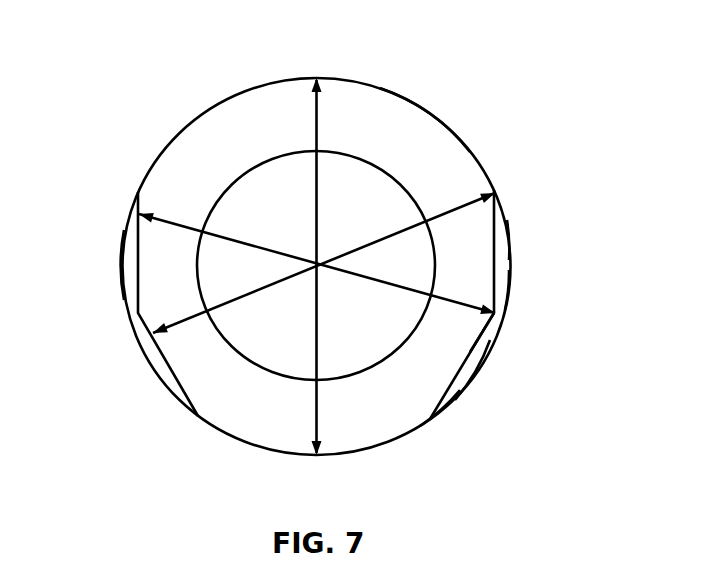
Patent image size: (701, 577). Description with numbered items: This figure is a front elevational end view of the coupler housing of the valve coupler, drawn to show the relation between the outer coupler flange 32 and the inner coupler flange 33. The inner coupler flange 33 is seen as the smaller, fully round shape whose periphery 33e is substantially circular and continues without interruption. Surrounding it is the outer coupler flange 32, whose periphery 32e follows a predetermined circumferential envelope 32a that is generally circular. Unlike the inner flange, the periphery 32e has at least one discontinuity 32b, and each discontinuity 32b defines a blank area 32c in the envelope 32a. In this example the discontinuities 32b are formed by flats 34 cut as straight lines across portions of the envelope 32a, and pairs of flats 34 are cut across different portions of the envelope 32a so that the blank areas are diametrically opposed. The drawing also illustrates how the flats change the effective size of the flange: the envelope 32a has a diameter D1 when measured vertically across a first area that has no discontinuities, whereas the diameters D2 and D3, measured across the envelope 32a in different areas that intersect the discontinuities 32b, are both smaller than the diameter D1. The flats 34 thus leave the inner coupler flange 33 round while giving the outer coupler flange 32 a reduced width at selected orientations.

The outer coupler flange 32 is at (380, 84).
The periphery of the outer coupler flange 32e is at (457, 131).
The circumferential envelope 32a is at (452, 404).
The discontinuity 32b is at (512, 254).
The blank area 32c is at (498, 302).
The inner coupler flange 33 is at (112, 268).
The periphery of the inner coupler flange 33e is at (472, 386).
The flat 34 is at (136, 233).
The diameter of the envelope in the first area D1 is at (315, 400).
The diameter of the envelope across a discontinuity D2 is at (395, 287).
The diameter of the envelope across a discontinuity D3 is at (405, 223).